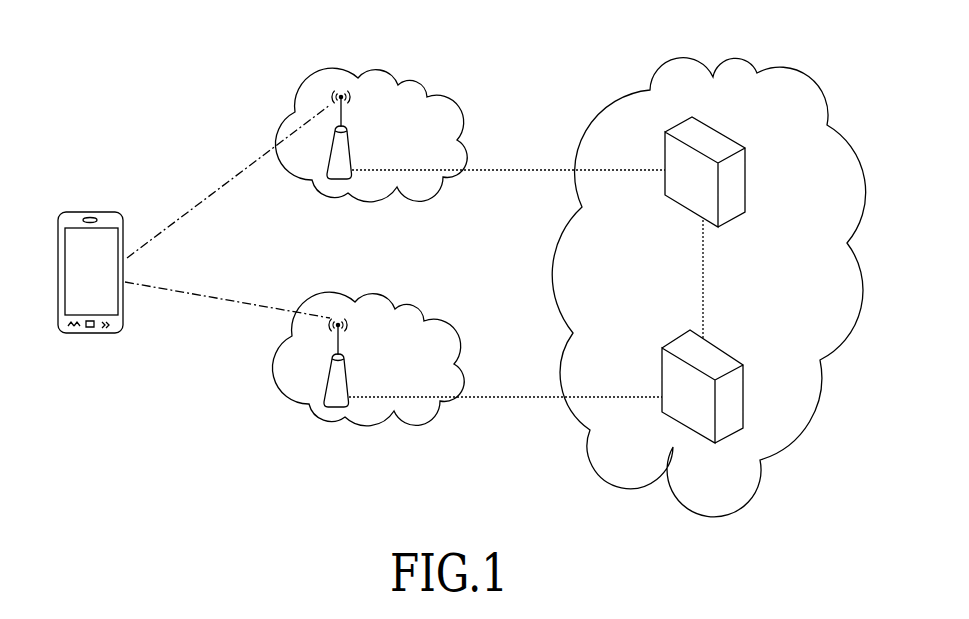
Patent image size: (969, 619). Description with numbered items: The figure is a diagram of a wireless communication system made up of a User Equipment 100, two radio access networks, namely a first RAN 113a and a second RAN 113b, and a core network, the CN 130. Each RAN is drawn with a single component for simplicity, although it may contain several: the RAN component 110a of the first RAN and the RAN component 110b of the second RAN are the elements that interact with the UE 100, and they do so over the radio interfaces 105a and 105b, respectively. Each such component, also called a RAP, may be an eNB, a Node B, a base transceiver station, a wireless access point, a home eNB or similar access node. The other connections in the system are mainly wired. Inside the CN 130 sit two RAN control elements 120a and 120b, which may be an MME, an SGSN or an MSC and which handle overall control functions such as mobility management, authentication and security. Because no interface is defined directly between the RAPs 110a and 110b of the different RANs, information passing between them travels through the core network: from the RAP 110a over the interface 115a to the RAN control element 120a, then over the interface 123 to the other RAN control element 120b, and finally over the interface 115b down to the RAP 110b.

The User Equipment 100 is at (90, 212).
The radio interface 105a is at (233, 178).
The radio interface 105b is at (220, 299).
The RAN component 110a is at (350, 143).
The RAN component 110b is at (349, 371).
The RAN 113a is at (372, 68).
The RAN 113b is at (369, 292).
The interface 115a is at (510, 170).
The interface 115b is at (510, 396).
The RAN control element 120a is at (718, 133).
The RAN control element 120b is at (730, 354).
The interface 123 is at (705, 273).
The CN 130 is at (685, 55).